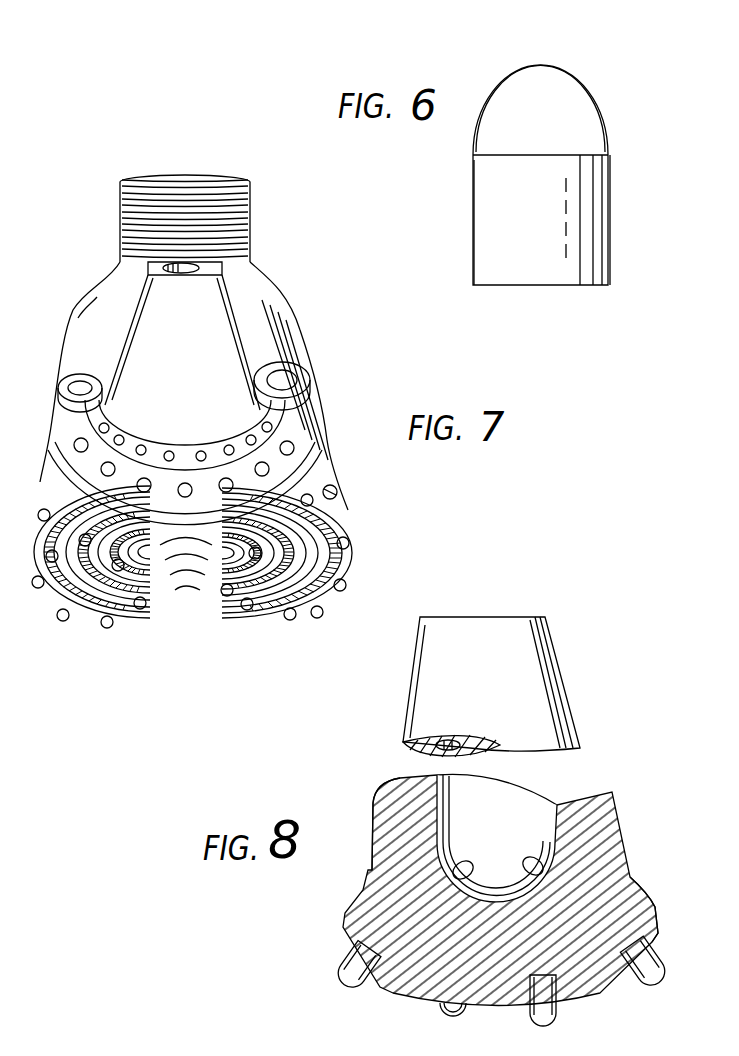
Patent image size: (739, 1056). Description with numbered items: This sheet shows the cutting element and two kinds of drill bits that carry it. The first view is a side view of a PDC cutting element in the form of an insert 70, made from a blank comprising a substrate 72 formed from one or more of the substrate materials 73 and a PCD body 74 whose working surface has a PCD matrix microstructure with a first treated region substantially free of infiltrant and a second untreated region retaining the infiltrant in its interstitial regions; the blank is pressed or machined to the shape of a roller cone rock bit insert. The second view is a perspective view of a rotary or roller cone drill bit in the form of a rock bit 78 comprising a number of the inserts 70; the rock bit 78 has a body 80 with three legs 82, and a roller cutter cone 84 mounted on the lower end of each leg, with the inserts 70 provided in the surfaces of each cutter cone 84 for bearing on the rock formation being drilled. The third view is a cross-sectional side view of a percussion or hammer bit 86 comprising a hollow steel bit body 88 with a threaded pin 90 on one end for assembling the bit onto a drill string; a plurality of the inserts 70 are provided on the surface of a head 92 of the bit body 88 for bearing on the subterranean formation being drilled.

In FIG. 6, the insert 70 is at (612, 95).
In FIG. 7, the insert 70 is at (350, 540).
In FIG. 8, the insert 70 is at (562, 1013).
In FIG. 6, the substrate 72 is at (612, 226).
In FIG. 6, the substrate materials 73 is at (572, 273).
In FIG. 6, the PCD body 74 is at (565, 128).
In FIG. 6, the rock bit 78 is at (486, 98).
In FIG. 7, the rock bit 78 is at (287, 302).
In FIG. 7, the body 80 is at (268, 342).
In FIG. 7, the legs 82 is at (280, 413).
In FIG. 7, the roller cutter cone 84 is at (187, 557).
In FIG. 8, the hammer bit 86 is at (640, 806).
In FIG. 8, the bit body 88 is at (380, 831).
In FIG. 8, the threaded pin 90 is at (568, 686).
In FIG. 8, the head 92 is at (657, 926).